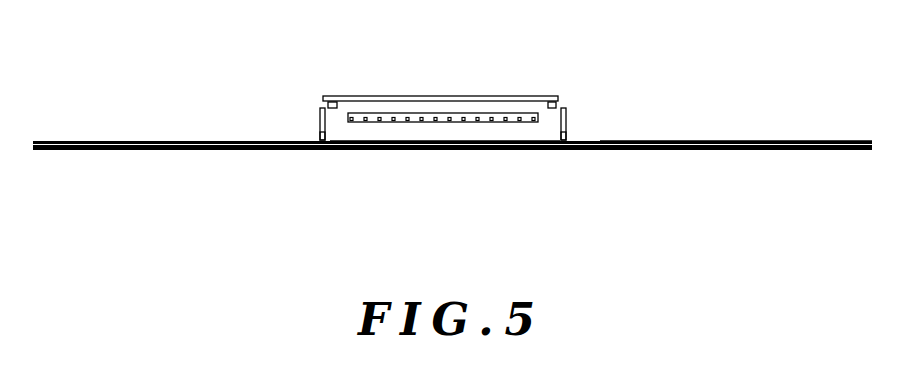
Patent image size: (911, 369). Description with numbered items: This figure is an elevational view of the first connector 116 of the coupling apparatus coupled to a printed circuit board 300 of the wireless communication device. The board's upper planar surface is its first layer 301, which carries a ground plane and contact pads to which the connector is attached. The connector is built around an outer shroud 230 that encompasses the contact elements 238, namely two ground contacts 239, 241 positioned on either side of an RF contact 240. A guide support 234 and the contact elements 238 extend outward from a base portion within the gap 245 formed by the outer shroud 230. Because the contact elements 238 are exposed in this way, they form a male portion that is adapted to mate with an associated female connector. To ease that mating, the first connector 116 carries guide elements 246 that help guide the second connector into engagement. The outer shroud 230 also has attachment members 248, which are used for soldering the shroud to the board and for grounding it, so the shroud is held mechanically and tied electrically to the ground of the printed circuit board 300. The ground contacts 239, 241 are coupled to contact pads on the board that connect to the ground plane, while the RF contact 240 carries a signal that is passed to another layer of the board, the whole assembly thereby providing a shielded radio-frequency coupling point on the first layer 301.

The first connector 116 is at (391, 67).
The outer shroud 230 is at (508, 96).
The guide support 234 is at (448, 113).
The contact elements 238 is at (390, 152).
The ground contact 239 is at (505, 122).
The RF contact 240 is at (519, 122).
The ground contact 241 is at (533, 122).
The gap 245 is at (330, 120).
The guide elements 246 is at (326, 103).
The attachment members 248 is at (322, 140).
The printed circuit board 300 is at (650, 130).
The first layer 301 is at (775, 141).